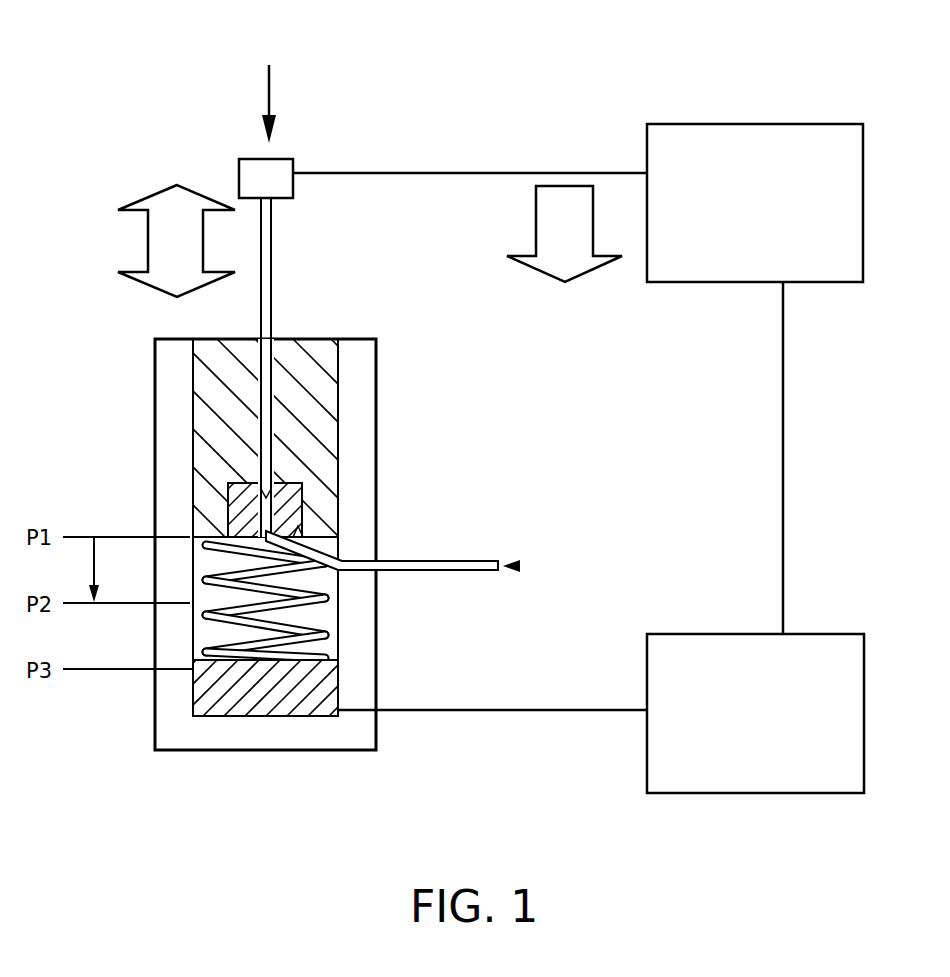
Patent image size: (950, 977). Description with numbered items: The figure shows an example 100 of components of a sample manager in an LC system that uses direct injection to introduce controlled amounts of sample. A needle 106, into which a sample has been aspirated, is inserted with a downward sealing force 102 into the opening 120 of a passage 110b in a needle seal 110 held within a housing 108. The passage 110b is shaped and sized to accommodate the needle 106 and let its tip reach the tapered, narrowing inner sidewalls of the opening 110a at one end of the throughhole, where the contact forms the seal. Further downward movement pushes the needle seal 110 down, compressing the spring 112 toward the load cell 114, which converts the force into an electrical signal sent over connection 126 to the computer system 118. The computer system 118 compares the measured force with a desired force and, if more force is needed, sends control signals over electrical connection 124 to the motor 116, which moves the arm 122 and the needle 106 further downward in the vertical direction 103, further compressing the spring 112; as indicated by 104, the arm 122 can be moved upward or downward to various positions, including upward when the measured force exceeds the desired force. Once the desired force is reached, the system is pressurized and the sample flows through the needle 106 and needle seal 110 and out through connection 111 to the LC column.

The example 100 is at (124, 46).
The sealing force 102 is at (270, 92).
The vertical direction 103 is at (536, 214).
The arm movement indication 104 is at (148, 241).
The needle 106 is at (270, 262).
The housing 108 is at (362, 378).
The needle seal 110 is at (303, 490).
The opening 110a is at (303, 508).
The passage 110b is at (256, 427).
The connection 111 is at (504, 554).
The spring 112 is at (330, 598).
The load cell 114 is at (338, 672).
The motor 116 is at (731, 231).
The computer system 118 is at (731, 760).
The opening 120 is at (275, 340).
The arm 122 is at (482, 172).
The electrical connection 124 is at (783, 432).
The connection 126 is at (467, 711).